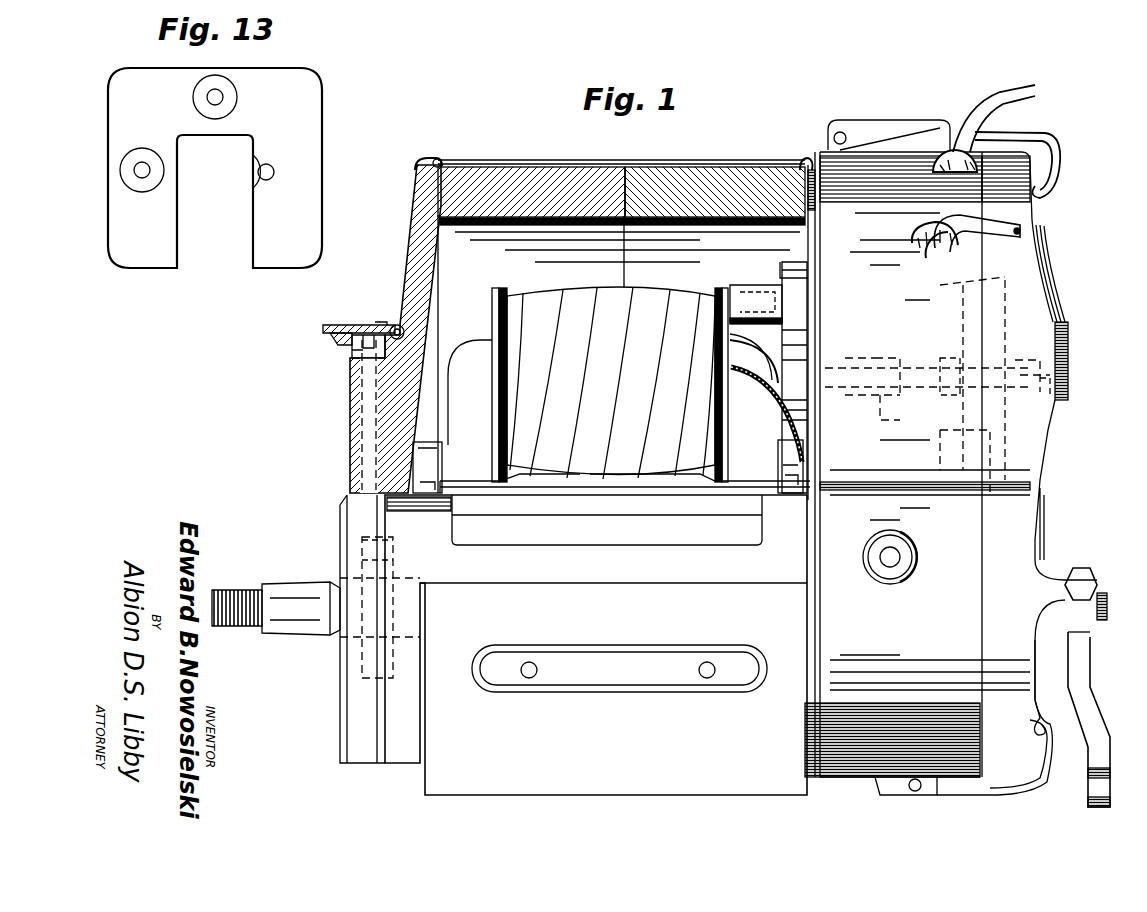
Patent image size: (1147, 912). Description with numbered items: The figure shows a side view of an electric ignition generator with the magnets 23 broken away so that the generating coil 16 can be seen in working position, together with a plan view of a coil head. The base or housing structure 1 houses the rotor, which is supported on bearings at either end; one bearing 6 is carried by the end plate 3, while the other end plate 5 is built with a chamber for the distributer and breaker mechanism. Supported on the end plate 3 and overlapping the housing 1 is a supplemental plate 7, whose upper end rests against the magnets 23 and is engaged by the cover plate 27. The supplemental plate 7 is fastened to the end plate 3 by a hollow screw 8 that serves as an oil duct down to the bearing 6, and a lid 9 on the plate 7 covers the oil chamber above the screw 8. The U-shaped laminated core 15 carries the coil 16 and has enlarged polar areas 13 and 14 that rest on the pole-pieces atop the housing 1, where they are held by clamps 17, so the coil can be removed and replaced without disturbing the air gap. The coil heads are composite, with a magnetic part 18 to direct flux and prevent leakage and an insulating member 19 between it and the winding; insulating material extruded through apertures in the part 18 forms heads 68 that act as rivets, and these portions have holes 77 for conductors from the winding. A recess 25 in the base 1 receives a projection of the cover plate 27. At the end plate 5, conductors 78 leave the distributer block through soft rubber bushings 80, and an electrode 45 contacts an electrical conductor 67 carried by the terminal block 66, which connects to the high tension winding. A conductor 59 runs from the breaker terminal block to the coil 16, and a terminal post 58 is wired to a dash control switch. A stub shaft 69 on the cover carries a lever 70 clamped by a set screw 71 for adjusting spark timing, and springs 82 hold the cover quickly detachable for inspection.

In FIG. 1, the base or housing structure 1 is at (596, 645).
In FIG. 1, the end plate 3 is at (347, 657).
In FIG. 1, the end plate 5 is at (936, 457).
In FIG. 1, the bearing 6 is at (365, 554).
In FIG. 1, the supplemental plate 7 is at (410, 280).
In FIG. 1, the screw 8 is at (362, 350).
In FIG. 1, the lid 9 is at (335, 326).
In FIG. 1, the polar area 13 is at (470, 470).
In FIG. 1, the polar area 14 is at (748, 478).
In FIG. 1, the core 15 is at (474, 362).
In FIG. 1, the generating coil 16 is at (660, 302).
In FIG. 1, the clamp 17 is at (431, 448).
In FIG. 1, the magnetic head part 18 is at (496, 322).
In FIG. 13, the insulating member 19 is at (318, 130).
In FIG. 1, the insulating member 19 is at (510, 296).
In FIG. 1, the magnet 23 is at (704, 176).
In FIG. 1, the recess 25 is at (628, 668).
In FIG. 1, the cover plate 27 is at (495, 168).
In FIG. 1, the electrode 45 is at (908, 382).
In FIG. 1, the terminal post 58 is at (900, 568).
In FIG. 1, the conductor 59 is at (765, 380).
In FIG. 1, the terminal block 66 is at (800, 327).
In FIG. 1, the electrical conductor 67 is at (790, 343).
In FIG. 13, the head 68 is at (197, 99).
In FIG. 1, the stub shaft 69 is at (1110, 606).
In FIG. 1, the lever 70 is at (1080, 683).
In FIG. 1, the set screw 71 is at (1085, 568).
In FIG. 13, the hole 77 is at (221, 97).
In FIG. 1, the conductor 78 is at (1005, 108).
In FIG. 1, the bushing 80 is at (946, 158).
In FIG. 1, the spring 82 is at (1058, 158).